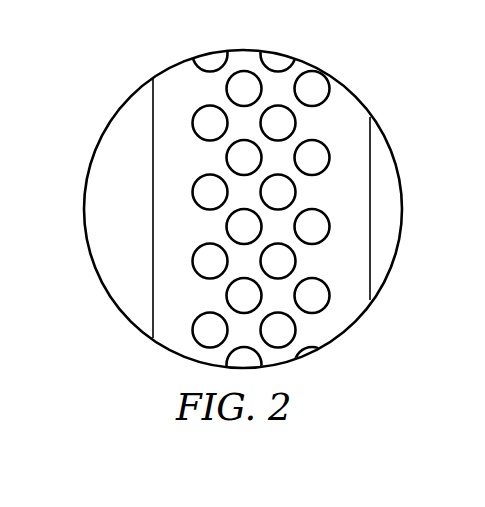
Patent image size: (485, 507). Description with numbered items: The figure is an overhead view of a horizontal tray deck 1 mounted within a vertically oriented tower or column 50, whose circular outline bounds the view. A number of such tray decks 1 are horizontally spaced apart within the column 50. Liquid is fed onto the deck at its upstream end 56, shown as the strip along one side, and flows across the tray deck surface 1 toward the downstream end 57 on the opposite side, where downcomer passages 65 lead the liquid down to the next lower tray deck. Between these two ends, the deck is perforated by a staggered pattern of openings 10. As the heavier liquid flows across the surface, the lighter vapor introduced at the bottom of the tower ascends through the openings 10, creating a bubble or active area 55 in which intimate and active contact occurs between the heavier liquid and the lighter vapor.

The tray deck 1 is at (186, 168).
The openings 10 is at (207, 128).
The column 50 is at (339, 333).
The active area 55 is at (345, 105).
The upstream end 56 is at (388, 160).
The downstream end 57 is at (152, 226).
The downcomer passages 65 is at (115, 152).